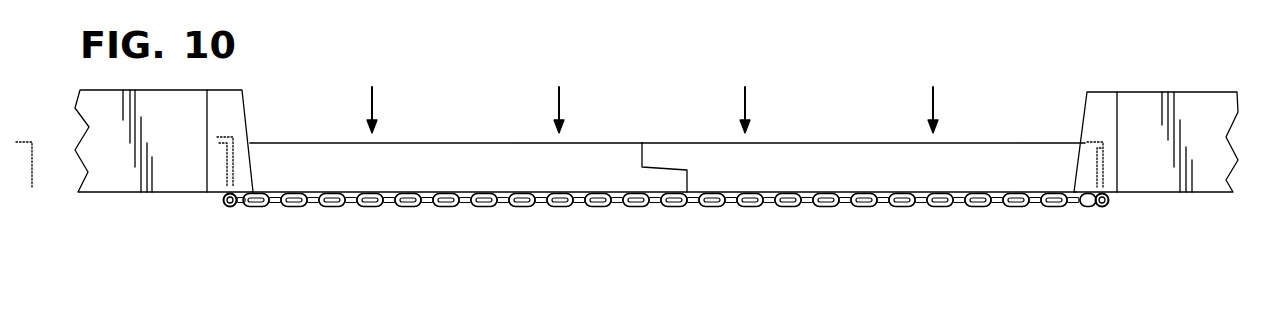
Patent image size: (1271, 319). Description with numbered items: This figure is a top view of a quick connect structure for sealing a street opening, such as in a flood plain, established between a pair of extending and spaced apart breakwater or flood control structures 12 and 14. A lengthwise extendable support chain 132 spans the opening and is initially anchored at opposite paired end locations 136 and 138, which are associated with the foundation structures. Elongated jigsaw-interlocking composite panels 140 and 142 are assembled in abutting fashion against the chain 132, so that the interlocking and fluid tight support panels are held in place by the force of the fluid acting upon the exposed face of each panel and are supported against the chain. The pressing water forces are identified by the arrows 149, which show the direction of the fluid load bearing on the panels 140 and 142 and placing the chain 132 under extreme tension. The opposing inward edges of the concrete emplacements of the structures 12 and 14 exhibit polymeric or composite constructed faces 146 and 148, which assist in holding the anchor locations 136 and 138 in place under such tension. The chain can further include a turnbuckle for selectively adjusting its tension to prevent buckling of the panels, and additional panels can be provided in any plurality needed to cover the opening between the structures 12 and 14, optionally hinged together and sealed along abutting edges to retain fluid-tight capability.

The flood control structure 12 is at (130, 175).
The flood control structure 14 is at (1163, 175).
The support chain 132 is at (608, 207).
The anchor end location 136 is at (222, 205).
The anchor end location 138 is at (1104, 208).
The composite panel 140 is at (455, 160).
The composite panel 142 is at (846, 162).
The composite constructed face 146 is at (235, 118).
The composite constructed face 148 is at (1095, 123).
The arrows 149 is at (745, 105).